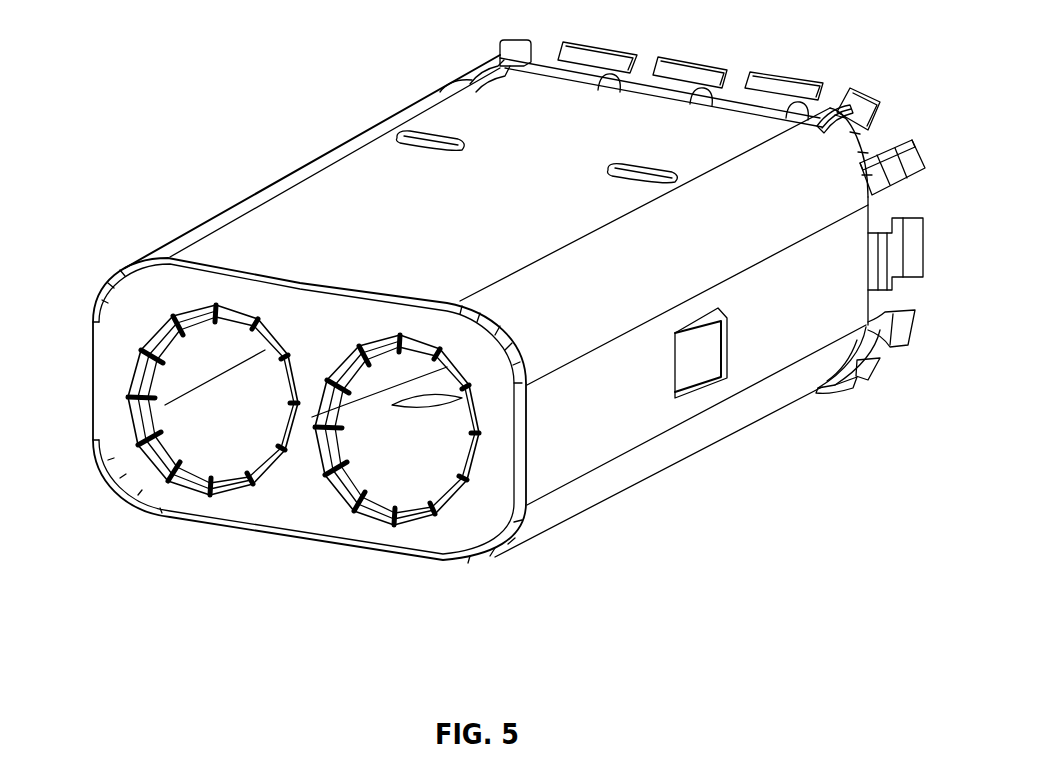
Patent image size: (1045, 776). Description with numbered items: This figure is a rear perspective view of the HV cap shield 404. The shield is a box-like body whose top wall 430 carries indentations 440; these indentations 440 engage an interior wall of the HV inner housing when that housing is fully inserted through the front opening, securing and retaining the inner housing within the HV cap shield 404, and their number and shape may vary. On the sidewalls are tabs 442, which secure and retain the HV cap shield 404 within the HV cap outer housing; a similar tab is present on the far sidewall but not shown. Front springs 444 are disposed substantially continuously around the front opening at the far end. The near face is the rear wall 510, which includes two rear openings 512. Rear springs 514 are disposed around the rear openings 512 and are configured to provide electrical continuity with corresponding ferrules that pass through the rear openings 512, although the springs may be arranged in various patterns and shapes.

The HV cap shield 404 is at (222, 72).
The top wall 430 is at (296, 206).
The indentations 440 is at (433, 134).
The tabs 442 is at (700, 372).
The front springs 444 is at (906, 158).
The rear wall 510 is at (136, 312).
The rear openings 512 is at (228, 421).
The rear springs 514 is at (165, 415).